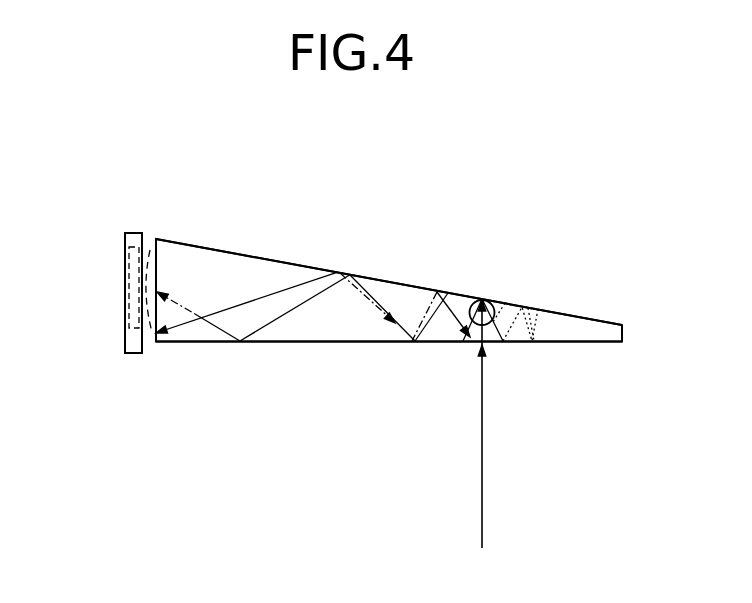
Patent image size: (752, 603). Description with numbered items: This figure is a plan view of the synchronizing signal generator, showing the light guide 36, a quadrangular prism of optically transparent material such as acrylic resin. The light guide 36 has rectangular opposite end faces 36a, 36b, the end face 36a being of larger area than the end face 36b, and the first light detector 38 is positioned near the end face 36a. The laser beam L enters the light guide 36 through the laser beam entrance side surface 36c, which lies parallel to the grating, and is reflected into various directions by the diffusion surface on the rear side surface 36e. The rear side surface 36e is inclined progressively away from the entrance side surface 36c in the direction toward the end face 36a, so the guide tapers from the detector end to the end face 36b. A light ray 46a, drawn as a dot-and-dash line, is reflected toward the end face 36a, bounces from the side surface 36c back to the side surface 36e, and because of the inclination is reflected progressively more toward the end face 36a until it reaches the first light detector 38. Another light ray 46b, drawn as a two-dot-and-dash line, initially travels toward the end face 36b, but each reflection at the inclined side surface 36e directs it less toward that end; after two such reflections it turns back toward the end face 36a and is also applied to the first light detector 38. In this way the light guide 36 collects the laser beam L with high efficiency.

The light guide 36 is at (236, 249).
The end face 36a is at (153, 258).
The end face 36b is at (623, 336).
The laser beam entrance side surface 36c is at (313, 343).
The rear side surface 36e is at (382, 279).
The first light detector 38 is at (133, 273).
The light ray 46a is at (437, 292).
The light ray 46b is at (505, 303).
The laser beam L is at (483, 422).